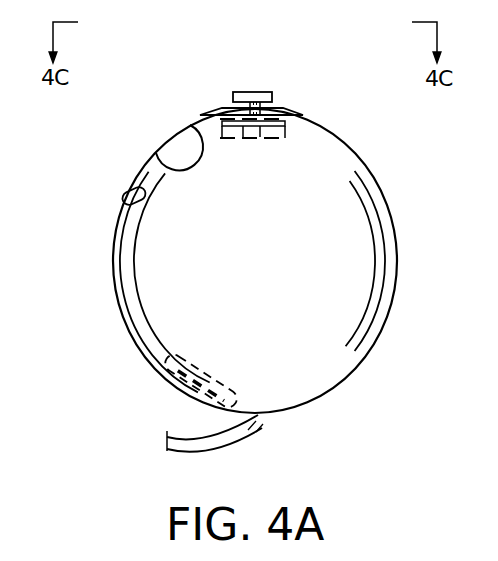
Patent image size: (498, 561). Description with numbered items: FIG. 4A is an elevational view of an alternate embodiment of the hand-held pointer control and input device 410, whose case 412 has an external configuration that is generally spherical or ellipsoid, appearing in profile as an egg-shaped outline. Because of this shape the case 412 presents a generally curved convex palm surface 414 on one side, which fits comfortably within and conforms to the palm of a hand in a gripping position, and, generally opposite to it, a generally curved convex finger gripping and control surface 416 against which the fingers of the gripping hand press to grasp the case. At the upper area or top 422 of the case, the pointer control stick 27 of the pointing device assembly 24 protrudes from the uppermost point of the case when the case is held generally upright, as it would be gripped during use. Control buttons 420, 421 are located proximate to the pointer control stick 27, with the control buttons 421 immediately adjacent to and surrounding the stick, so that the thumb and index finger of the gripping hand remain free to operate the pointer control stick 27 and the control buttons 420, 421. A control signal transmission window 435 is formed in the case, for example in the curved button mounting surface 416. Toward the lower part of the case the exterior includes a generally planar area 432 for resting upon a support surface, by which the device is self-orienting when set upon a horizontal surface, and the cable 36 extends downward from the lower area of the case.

The pointing device assembly 24 is at (230, 82).
The pointer control stick 27 is at (252, 92).
The cable 36 is at (232, 437).
The device 410 is at (150, 92).
The case 412 is at (137, 361).
The convex palm surface 414 is at (363, 262).
The finger gripping and control surface 416 is at (148, 278).
The control button 420 is at (176, 146).
The control buttons 421 is at (276, 111).
The top of the case 422 is at (330, 134).
The planar area 432 is at (193, 393).
The control signal transmission window 435 is at (113, 193).